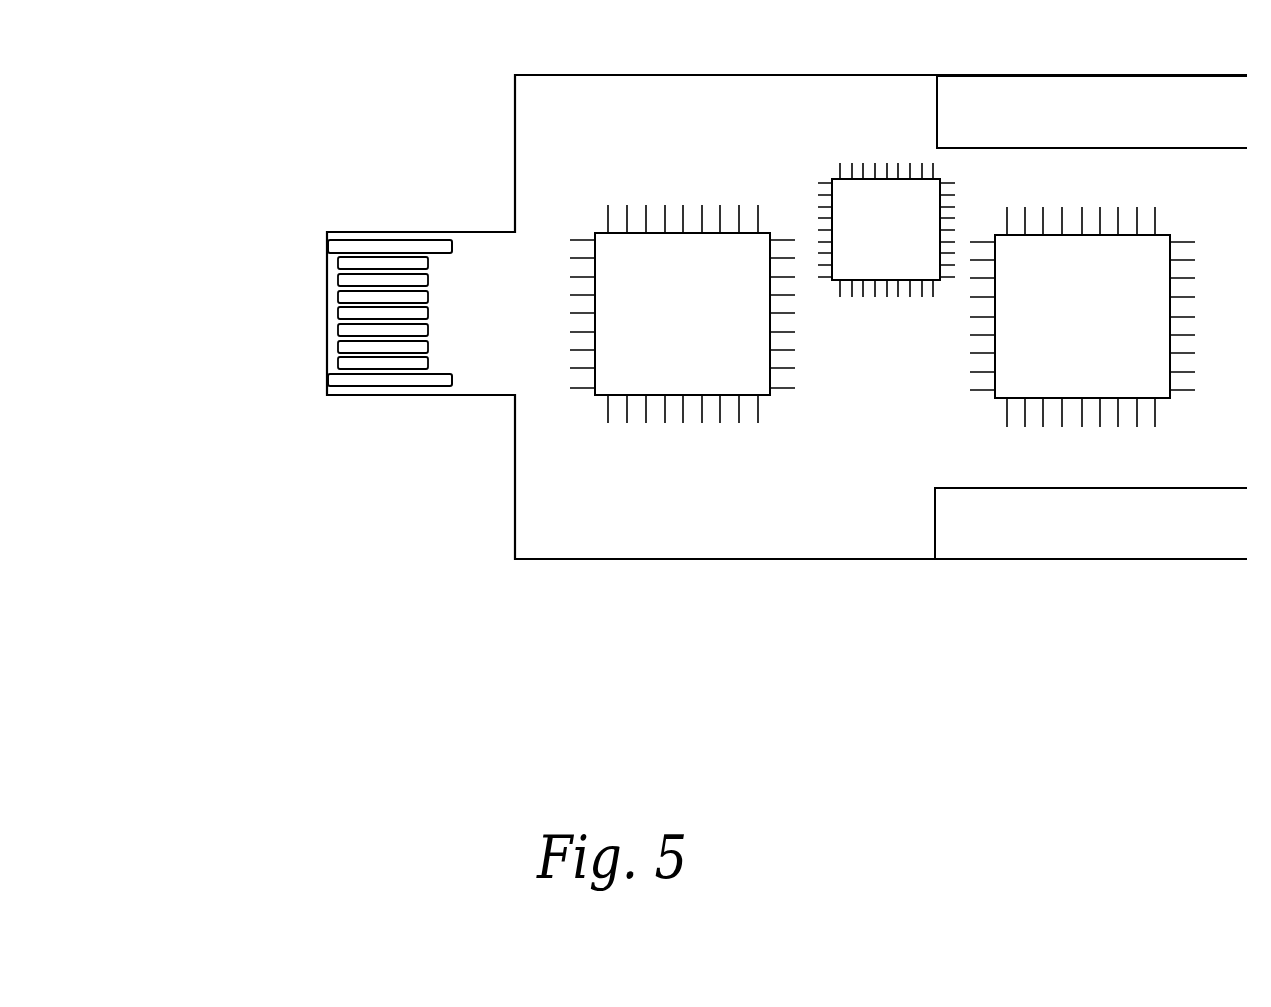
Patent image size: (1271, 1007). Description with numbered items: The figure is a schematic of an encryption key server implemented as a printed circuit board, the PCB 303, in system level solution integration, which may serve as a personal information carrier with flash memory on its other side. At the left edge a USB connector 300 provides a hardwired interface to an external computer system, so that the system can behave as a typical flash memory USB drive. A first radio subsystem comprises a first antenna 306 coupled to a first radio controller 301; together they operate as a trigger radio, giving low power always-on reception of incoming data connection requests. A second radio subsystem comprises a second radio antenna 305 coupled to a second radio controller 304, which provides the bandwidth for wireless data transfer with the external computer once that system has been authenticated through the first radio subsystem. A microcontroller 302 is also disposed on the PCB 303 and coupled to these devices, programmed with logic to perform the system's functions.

The USB connector 300 is at (256, 270).
The first radio controller 301 is at (669, 149).
The microcontroller 302 is at (697, 281).
The PCB 303 is at (747, 541).
The second radio controller 304 is at (997, 399).
The second radio antenna 305 is at (987, 560).
The first antenna 306 is at (1108, 78).